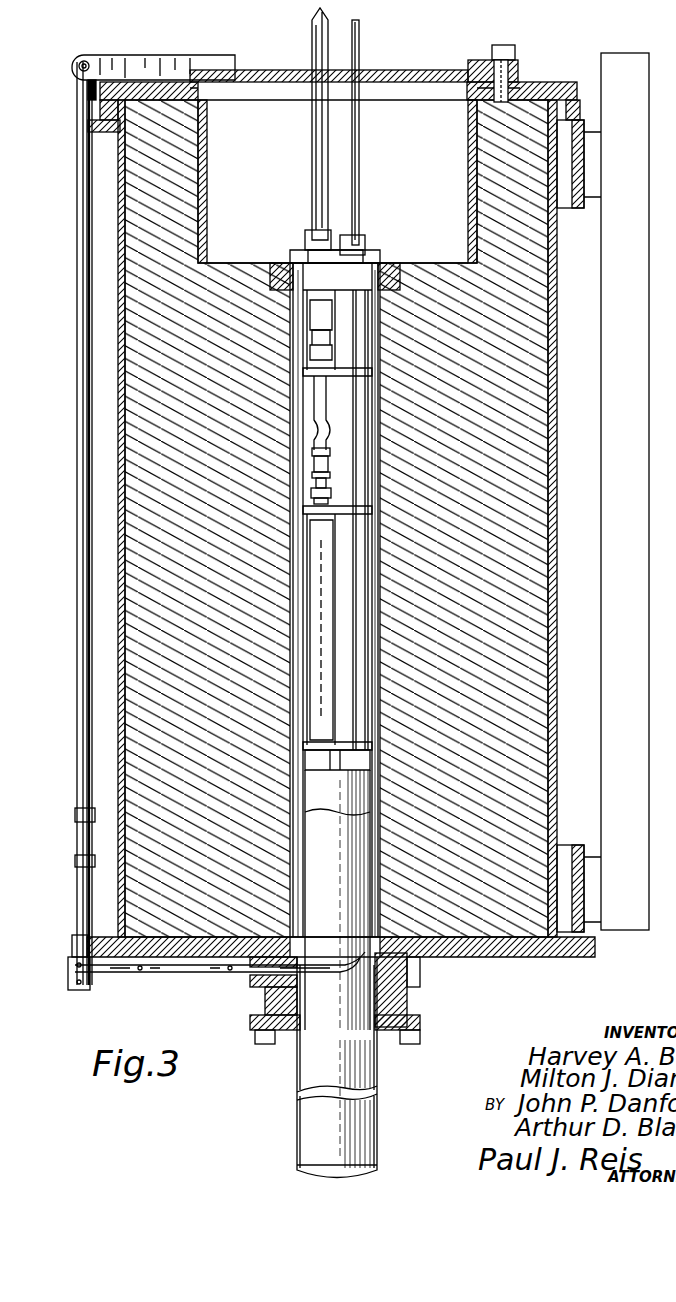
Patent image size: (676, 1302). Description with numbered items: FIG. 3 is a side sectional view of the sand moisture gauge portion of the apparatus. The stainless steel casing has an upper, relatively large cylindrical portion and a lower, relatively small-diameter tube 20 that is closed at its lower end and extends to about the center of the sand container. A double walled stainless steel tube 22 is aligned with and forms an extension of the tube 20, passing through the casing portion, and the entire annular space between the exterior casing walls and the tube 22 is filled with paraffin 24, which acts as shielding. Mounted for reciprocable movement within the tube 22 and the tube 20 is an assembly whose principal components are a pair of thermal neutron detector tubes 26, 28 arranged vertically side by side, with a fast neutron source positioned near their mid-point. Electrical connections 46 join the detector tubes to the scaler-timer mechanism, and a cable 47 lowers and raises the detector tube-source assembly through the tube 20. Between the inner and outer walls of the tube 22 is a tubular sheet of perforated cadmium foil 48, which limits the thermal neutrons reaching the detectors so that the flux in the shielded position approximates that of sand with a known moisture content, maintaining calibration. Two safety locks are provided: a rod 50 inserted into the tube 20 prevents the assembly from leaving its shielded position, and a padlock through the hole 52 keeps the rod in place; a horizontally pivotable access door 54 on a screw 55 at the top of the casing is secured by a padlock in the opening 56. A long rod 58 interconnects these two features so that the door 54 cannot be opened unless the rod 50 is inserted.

The tube 20 is at (377, 1100).
The double walled stainless steel tube 22 is at (378, 602).
The paraffin 24 is at (548, 612).
The thermal neutron detector tube 26 is at (318, 603).
The thermal neutron detector tube 28 is at (372, 806).
The electrical connections 46 is at (303, 378).
The cable 47 is at (358, 198).
The cadmium foil 48 is at (378, 448).
The rod 50 is at (208, 975).
The hole 52 is at (80, 990).
The access door 54 is at (262, 76).
The screw 55 is at (502, 62).
The opening 56 is at (96, 53).
The long rod 58 is at (82, 412).